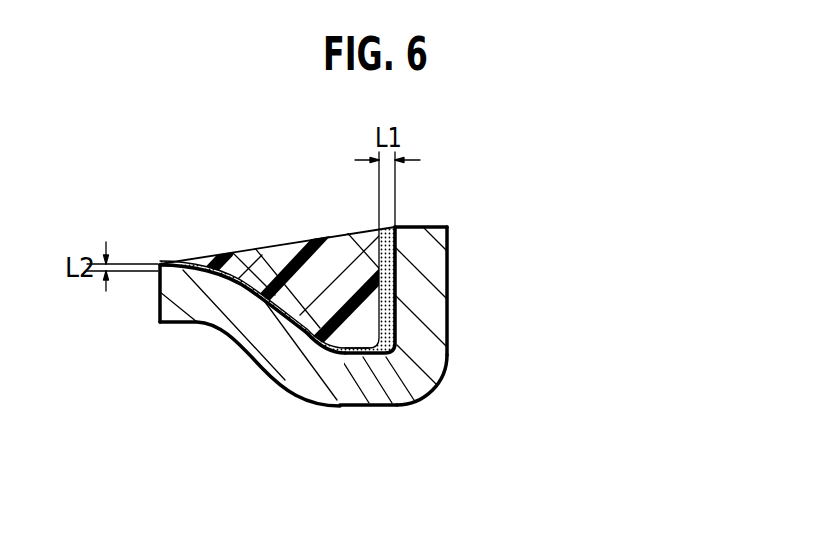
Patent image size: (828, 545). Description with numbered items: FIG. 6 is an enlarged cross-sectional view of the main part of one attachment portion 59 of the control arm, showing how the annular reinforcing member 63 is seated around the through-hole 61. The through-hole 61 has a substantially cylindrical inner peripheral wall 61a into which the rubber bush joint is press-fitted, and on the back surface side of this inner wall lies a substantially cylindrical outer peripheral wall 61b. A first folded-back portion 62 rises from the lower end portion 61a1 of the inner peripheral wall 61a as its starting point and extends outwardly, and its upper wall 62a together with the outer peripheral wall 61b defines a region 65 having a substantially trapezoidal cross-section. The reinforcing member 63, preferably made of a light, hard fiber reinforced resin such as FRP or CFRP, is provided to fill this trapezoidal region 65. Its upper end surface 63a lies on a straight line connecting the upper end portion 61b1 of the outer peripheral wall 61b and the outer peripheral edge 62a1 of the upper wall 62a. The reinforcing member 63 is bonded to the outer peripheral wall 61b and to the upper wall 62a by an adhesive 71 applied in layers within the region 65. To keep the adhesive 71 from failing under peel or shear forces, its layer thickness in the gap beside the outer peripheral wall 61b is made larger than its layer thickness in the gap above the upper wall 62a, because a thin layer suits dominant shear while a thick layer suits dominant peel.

The attachment portion 59 is at (489, 144).
The through-hole 61 is at (448, 255).
The inner peripheral wall 61a is at (448, 328).
The lower end portion of the inner peripheral wall 61a1 is at (393, 406).
The outer peripheral wall 61b is at (388, 268).
The upper end portion of the outer peripheral wall 61b1 is at (396, 226).
The first folded-back portion 62 is at (243, 322).
The upper wall of the first folded-back portion 62a is at (291, 315).
The outer peripheral edge of the upper wall 62a1 is at (154, 268).
The annular reinforcing member 63 is at (350, 238).
The upper end surface of the reinforcing member 63a is at (283, 243).
The region 65 is at (364, 350).
The adhesive 71 is at (445, 362).